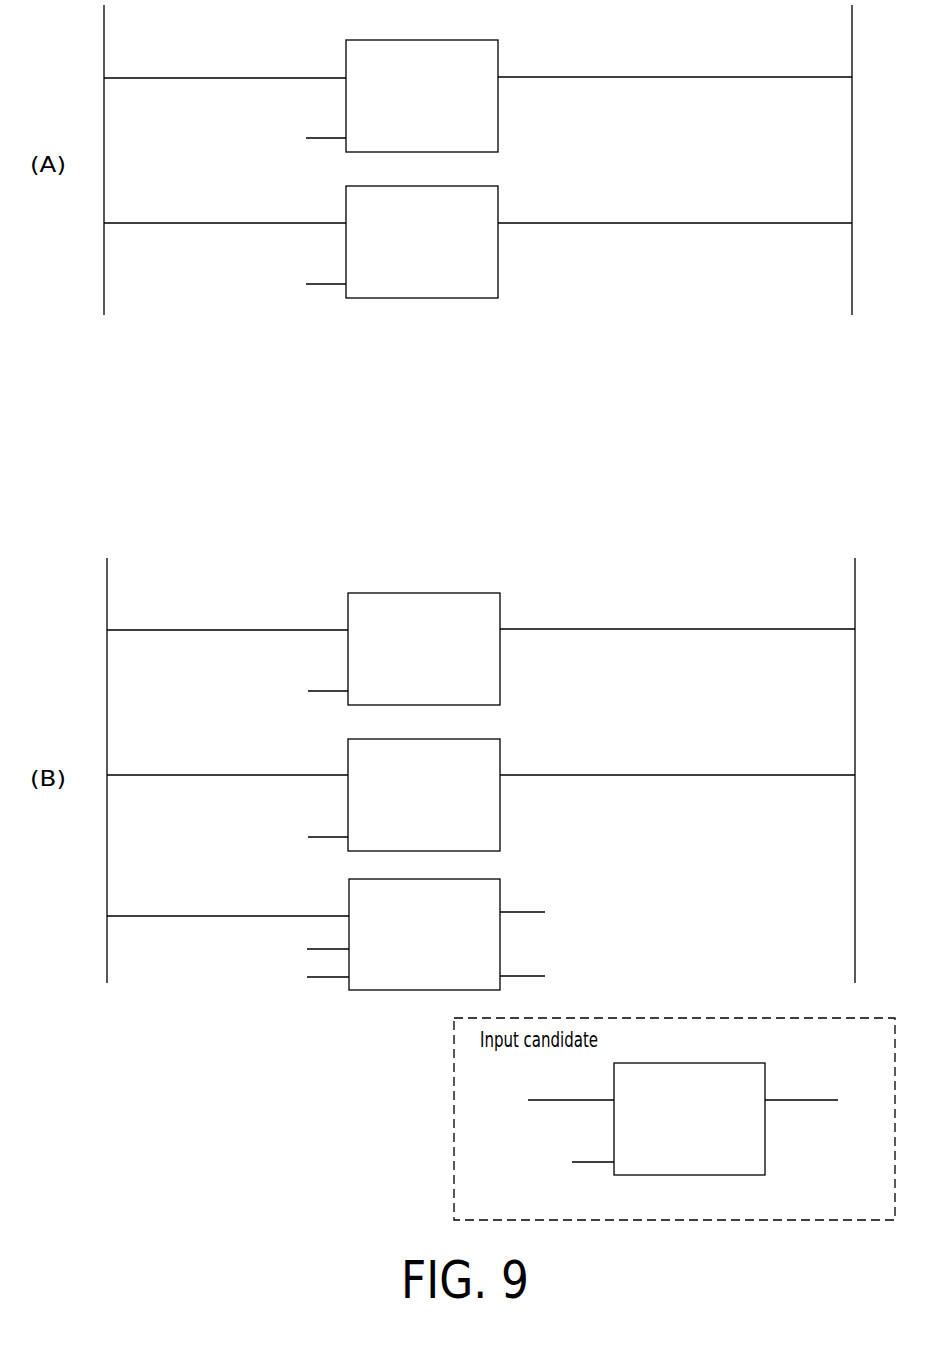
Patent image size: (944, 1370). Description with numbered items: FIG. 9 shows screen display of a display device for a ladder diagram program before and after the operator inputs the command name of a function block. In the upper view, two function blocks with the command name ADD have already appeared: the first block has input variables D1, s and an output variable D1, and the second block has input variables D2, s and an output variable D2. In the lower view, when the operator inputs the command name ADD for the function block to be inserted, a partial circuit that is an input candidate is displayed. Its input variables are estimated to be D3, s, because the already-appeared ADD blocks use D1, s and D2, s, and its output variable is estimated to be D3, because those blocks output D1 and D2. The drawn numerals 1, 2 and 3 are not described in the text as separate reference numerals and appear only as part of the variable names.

The input/output variable D1 is at (479, 372).
The input/output variable D2 is at (479, 518).
The estimated input/output variable D3 is at (683, 1119).
The ADD function block for D1 1 is at (545, 666).
The ADD function block for D2 2 is at (543, 813).
The ADD function block for D3 (input candidate) 3 is at (808, 1137).
The input variable s is at (428, 651).
The command name ADD is at (326, 934).